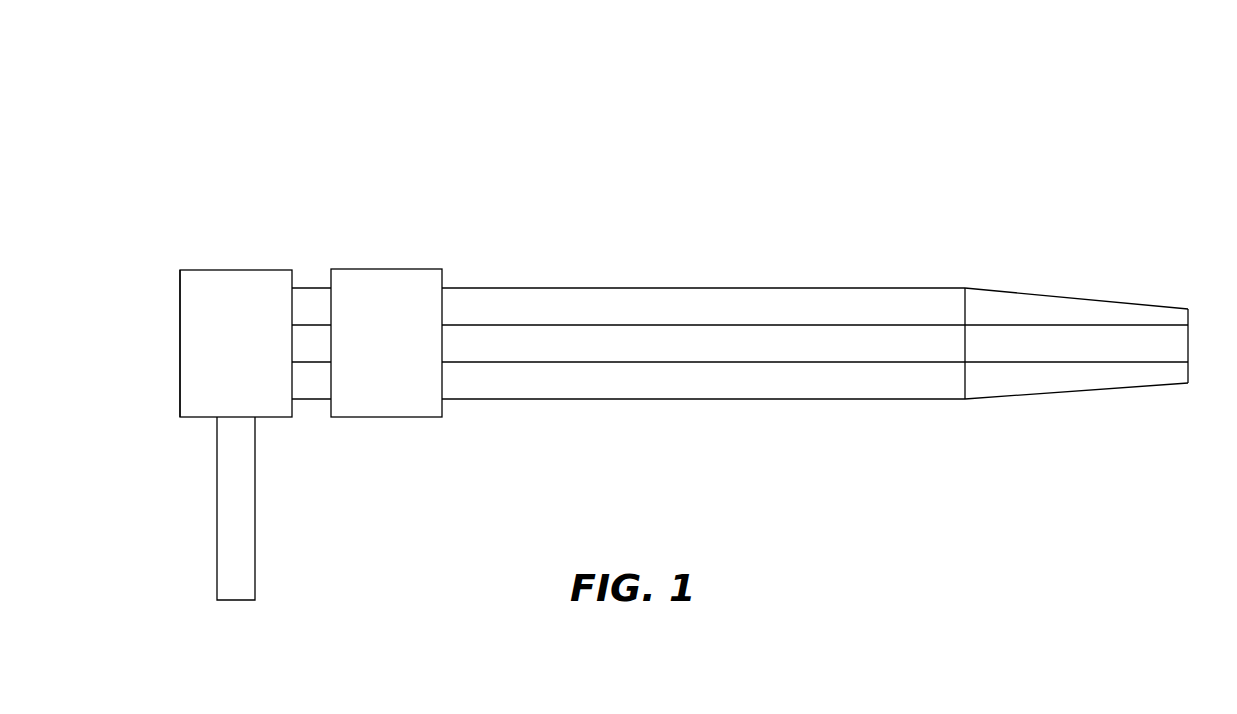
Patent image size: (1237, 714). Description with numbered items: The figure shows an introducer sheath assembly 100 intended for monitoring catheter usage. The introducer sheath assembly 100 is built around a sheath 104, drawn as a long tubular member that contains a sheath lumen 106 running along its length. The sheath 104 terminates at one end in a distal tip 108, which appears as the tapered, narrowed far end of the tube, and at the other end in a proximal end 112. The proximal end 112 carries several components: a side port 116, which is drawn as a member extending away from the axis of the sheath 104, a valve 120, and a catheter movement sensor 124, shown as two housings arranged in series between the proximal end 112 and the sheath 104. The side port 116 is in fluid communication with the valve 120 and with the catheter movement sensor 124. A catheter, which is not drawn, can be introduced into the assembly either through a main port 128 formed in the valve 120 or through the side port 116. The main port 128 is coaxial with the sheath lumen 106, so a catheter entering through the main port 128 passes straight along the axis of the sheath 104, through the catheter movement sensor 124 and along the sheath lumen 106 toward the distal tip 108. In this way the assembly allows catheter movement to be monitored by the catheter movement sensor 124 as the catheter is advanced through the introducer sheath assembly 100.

The introducer sheath assembly 100 is at (690, 97).
The sheath 104 is at (815, 303).
The sheath lumen 106 is at (815, 274).
The distal tip 108 is at (1211, 307).
The proximal end 112 is at (269, 394).
The side port 116 is at (264, 508).
The valve 120 is at (236, 303).
The catheter movement sensor 124 is at (367, 303).
The main port 128 is at (138, 335).